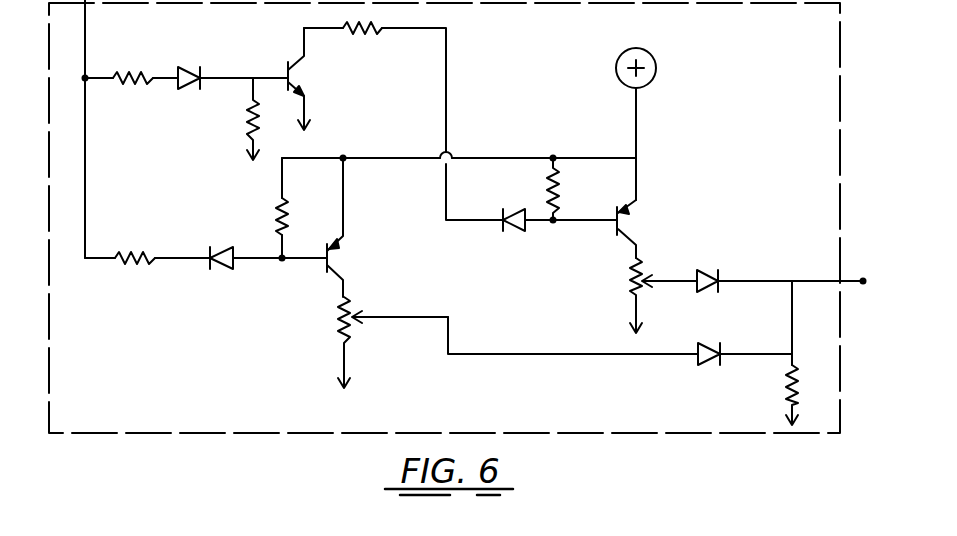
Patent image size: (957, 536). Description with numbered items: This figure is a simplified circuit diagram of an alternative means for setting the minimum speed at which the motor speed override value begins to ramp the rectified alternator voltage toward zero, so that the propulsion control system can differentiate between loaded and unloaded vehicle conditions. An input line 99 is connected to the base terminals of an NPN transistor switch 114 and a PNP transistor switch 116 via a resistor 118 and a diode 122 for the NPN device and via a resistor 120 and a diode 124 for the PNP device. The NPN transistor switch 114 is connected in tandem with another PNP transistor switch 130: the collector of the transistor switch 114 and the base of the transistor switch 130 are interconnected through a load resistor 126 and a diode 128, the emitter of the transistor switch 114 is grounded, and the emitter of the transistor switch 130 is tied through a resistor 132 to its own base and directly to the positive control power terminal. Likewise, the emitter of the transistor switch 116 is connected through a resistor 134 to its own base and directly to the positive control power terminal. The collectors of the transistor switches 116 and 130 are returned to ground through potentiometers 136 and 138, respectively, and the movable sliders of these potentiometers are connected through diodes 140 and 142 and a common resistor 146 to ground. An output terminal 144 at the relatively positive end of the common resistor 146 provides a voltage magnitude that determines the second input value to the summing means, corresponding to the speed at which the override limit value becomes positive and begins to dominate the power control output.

The line 99 is at (85, 46).
The resistor 118 is at (124, 72).
The diode 122 is at (190, 64).
The NPN transistor switch 114 is at (300, 80).
The load resistor 126 is at (362, 33).
The resistor 120 is at (137, 263).
The diode 124 is at (230, 248).
The resistor 134 is at (276, 212).
The PNP transistor switch 116 is at (340, 255).
The potentiometer 136 is at (340, 308).
The diode 128 is at (513, 233).
The resistor 132 is at (561, 178).
The PNP transistor switch 130 is at (631, 217).
The potentiometer 138 is at (622, 283).
The diode 142 is at (700, 268).
The output terminal 144 is at (863, 276).
The diode 140 is at (705, 362).
The common resistor 146 is at (782, 392).